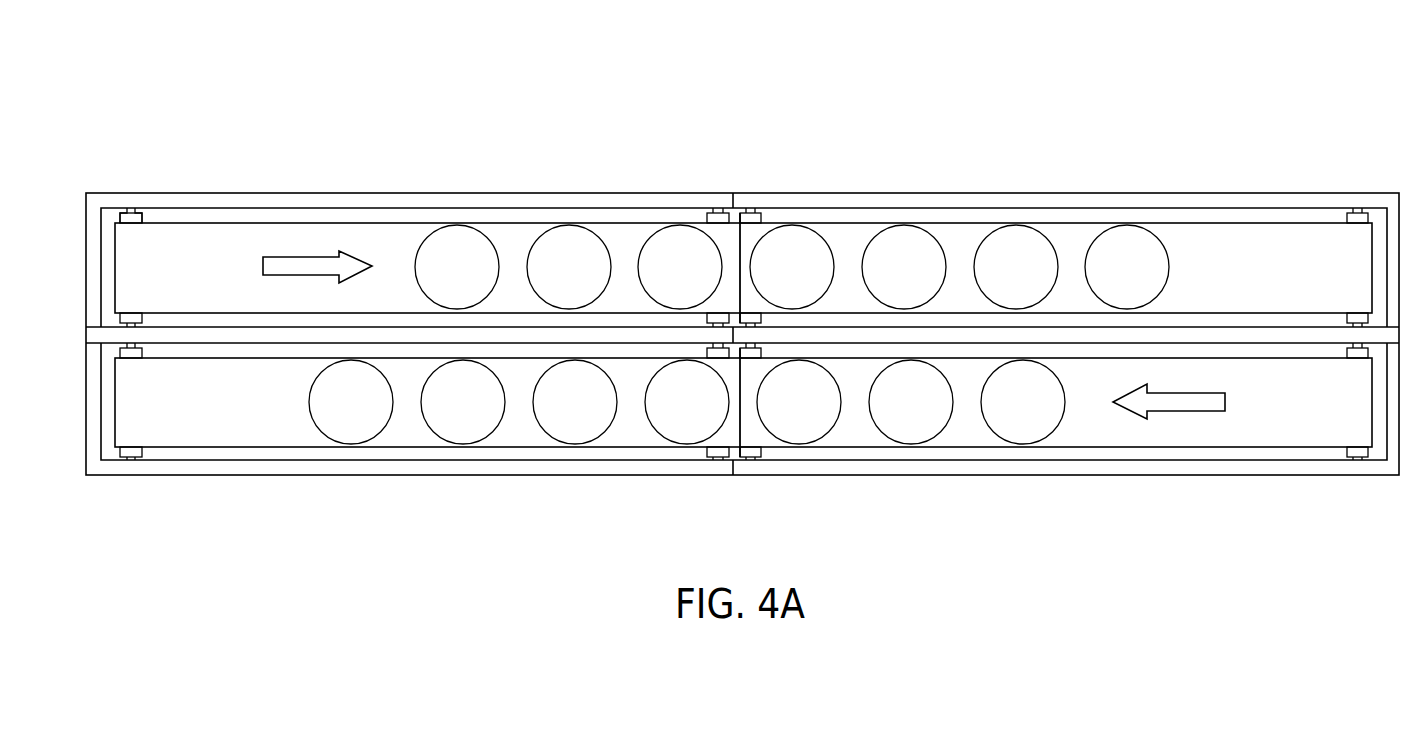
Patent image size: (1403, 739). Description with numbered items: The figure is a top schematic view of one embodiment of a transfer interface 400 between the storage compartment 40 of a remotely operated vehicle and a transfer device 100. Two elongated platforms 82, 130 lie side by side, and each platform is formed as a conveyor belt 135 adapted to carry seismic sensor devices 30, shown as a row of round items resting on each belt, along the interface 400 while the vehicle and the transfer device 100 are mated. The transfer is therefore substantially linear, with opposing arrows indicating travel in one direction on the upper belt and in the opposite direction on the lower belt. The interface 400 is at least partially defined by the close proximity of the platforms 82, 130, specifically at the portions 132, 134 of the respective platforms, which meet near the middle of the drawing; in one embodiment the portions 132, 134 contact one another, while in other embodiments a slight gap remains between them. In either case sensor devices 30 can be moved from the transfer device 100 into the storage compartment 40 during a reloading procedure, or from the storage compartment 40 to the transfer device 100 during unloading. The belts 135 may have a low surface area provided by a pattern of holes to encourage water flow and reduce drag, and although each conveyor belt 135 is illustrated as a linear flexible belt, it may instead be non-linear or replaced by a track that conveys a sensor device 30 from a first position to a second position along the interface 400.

The storage compartment 40 is at (602, 103).
The transfer device 100 is at (1100, 178).
The transfer interface 400 is at (742, 189).
The portion 132 is at (738, 248).
The portion 134 is at (745, 277).
The platform 82 is at (159, 243).
The platform 130 is at (1265, 240).
The conveyor belt 135 is at (1335, 283).
The sensor device 30 is at (455, 242).